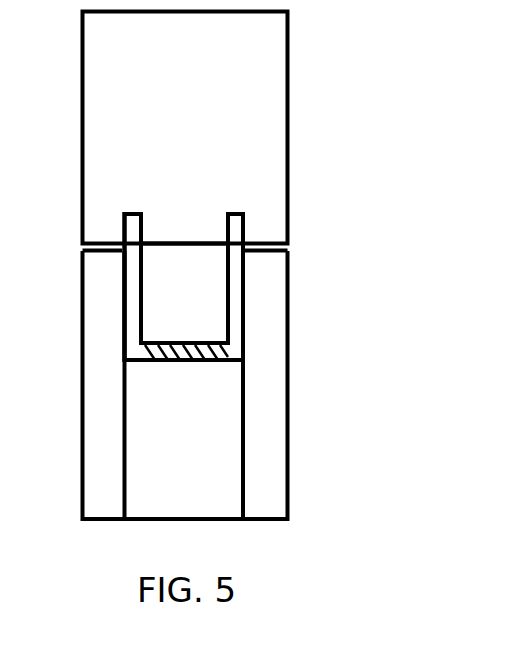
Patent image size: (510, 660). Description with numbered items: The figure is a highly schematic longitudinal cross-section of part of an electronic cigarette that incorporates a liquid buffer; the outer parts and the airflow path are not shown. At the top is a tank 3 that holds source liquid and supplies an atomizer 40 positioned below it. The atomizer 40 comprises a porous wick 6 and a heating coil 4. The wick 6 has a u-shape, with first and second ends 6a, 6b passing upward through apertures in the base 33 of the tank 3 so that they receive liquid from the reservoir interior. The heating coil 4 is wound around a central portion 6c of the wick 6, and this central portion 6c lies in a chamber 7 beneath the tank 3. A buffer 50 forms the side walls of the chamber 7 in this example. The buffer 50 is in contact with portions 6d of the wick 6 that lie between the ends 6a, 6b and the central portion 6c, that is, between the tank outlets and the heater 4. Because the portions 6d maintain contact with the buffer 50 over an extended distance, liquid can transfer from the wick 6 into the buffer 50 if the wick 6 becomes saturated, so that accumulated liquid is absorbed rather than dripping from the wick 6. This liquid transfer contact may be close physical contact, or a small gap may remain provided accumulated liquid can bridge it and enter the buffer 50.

The tank 3 is at (263, 80).
The heating coil 4 is at (188, 363).
The porous wick 6 is at (235, 282).
The first end of wick 6a is at (245, 227).
The second end of wick 6b is at (122, 228).
The central portion of wick 6c is at (227, 337).
The portions of wick 6d is at (118, 362).
The chamber 7 is at (193, 489).
The base of tank 33 is at (165, 246).
The atomizer 40 is at (365, 213).
The buffer 50 is at (93, 467).